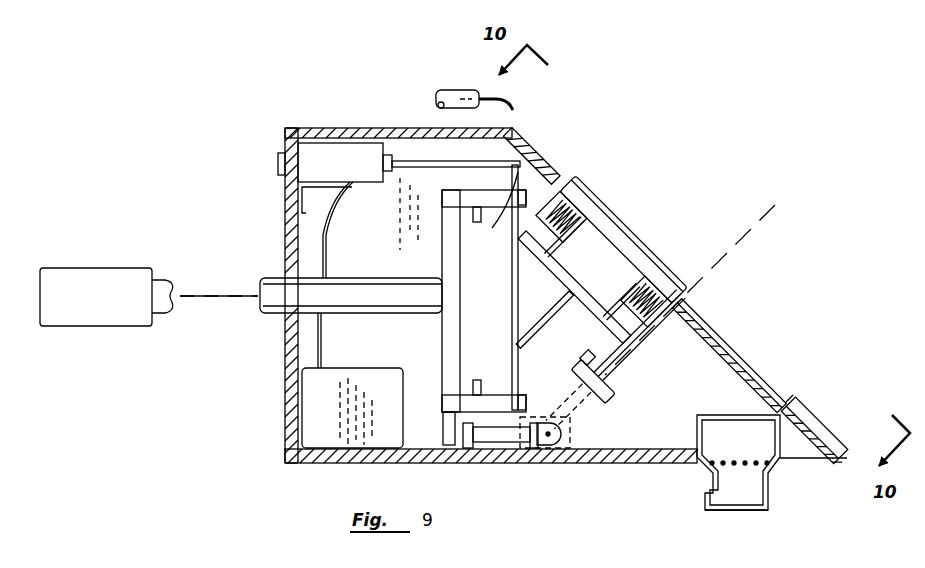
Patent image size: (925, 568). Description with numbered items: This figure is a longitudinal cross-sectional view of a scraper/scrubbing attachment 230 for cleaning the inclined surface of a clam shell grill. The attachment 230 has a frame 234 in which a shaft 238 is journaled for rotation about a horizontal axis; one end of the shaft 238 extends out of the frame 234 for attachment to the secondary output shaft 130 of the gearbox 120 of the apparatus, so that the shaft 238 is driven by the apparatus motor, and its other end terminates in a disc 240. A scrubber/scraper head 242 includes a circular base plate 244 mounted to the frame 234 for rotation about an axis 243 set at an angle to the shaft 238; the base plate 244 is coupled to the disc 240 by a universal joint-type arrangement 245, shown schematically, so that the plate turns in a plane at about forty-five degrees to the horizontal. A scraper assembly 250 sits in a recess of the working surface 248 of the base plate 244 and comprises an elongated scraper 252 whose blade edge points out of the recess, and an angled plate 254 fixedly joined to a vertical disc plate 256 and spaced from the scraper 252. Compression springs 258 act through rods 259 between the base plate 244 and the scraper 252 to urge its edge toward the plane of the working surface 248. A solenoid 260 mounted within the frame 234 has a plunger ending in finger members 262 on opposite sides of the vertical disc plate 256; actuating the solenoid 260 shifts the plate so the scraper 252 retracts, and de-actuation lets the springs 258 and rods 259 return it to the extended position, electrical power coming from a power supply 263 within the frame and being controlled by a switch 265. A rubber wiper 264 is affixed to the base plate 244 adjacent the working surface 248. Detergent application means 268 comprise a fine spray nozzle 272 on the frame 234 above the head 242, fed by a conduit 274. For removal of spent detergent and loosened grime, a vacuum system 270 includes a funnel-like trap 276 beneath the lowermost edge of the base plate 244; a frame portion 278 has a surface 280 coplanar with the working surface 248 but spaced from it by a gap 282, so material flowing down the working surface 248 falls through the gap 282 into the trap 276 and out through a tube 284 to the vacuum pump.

The scraper/scrubbing attachment 230 is at (285, 110).
The frame 234 is at (288, 403).
The fine spray nozzle 272 is at (532, 138).
The solenoid 260 is at (352, 152).
The switch 265 is at (278, 165).
The control box 263 is at (322, 421).
The shaft 238 is at (272, 283).
The gearbox 120 is at (90, 327).
The secondary output shaft 130 is at (163, 282).
The vertical disc plate 256 is at (512, 297).
The disc 240 is at (443, 337).
The finger members 262 is at (515, 170).
The universal joint-type arrangement 245 is at (572, 431).
The elongated scraper 252 is at (626, 232).
The scraper assembly 250 is at (569, 174).
The rods 259 is at (590, 213).
The compression springs 258 is at (638, 288).
The angled plate 254 is at (580, 305).
The axis 243 is at (617, 368).
The scrubber/scraper head 242 is at (730, 322).
The rubber wiper 264 is at (713, 312).
The circular base plate 244 is at (700, 340).
The working surface 248 is at (710, 290).
The frame portion 278 is at (812, 412).
The surface 280 is at (836, 432).
The gap 282 is at (781, 411).
The vacuum system 270 is at (771, 481).
The funnel-like trap 276 is at (714, 474).
The tube 284 is at (721, 512).
The detergent application means 268 is at (452, 84).
The conduit 274 is at (452, 108).